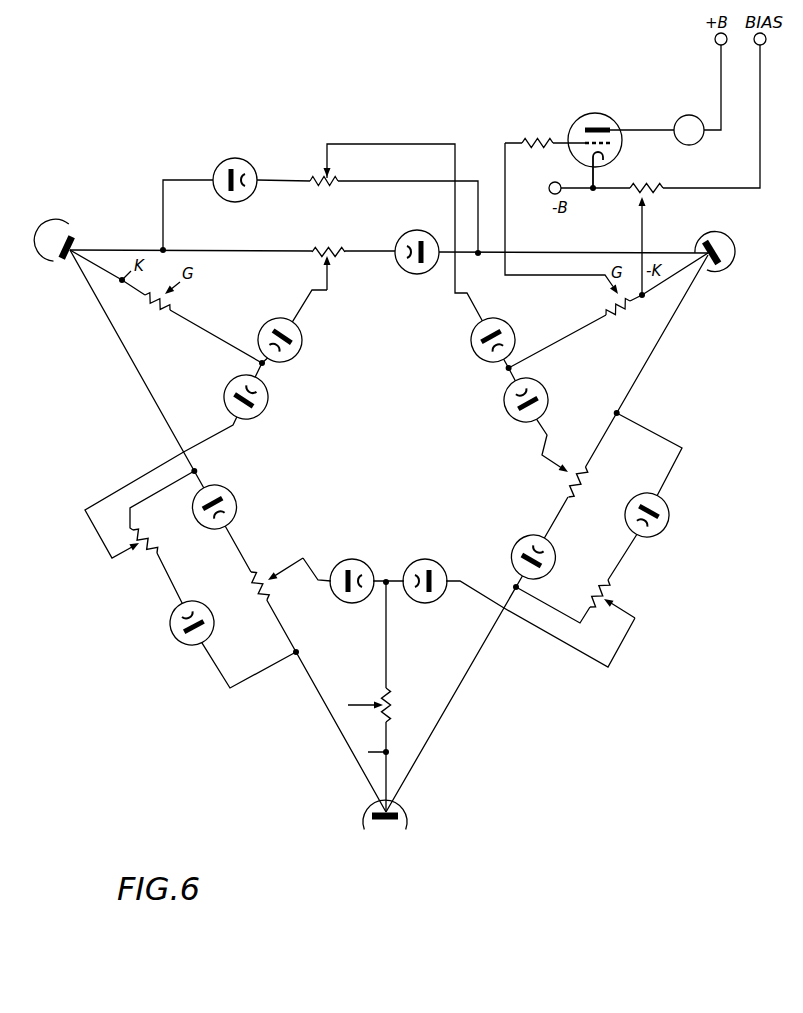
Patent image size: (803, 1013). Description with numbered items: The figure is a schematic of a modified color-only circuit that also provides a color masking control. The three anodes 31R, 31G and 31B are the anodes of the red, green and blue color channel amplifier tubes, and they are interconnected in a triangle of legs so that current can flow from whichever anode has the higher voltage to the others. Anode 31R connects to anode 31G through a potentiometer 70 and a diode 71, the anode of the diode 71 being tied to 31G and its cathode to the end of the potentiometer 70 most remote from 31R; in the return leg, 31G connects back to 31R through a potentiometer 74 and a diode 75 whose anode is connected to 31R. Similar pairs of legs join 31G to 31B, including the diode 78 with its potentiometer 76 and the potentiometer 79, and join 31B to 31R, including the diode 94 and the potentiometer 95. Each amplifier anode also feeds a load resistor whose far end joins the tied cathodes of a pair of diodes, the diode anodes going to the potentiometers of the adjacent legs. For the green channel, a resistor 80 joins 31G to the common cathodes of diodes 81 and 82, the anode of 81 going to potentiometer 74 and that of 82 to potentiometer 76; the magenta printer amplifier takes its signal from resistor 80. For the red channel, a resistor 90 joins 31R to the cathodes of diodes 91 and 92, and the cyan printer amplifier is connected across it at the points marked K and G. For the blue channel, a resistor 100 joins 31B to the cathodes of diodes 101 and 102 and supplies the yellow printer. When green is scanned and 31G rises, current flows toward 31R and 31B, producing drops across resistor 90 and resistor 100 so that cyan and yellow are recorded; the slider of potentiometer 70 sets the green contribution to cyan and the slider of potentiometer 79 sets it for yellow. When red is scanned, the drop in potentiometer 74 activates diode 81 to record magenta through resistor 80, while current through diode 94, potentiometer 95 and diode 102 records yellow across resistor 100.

The anode of red color channel amplifier tube 31R is at (45, 240).
The anode of green color channel amplifier tube 31G is at (732, 251).
The anode of blue color channel amplifier tube 31B is at (386, 829).
The potentiometer 70 is at (343, 249).
The diode 71 is at (419, 240).
The potentiometer 74 is at (322, 194).
The diode 75 is at (236, 203).
The potentiometer 76 is at (590, 478).
The diode 78 is at (522, 542).
The potentiometer 79 is at (612, 590).
The resistor 80 is at (628, 313).
The diode 81 is at (515, 338).
The diode 82 is at (548, 395).
The resistor 90 is at (158, 316).
The diode 91 is at (269, 407).
The diode 92 is at (303, 347).
The diode 94 is at (236, 498).
The potentiometer 95 is at (262, 568).
The resistor 100 is at (392, 698).
The diode 101 is at (423, 562).
The diode 102 is at (355, 562).